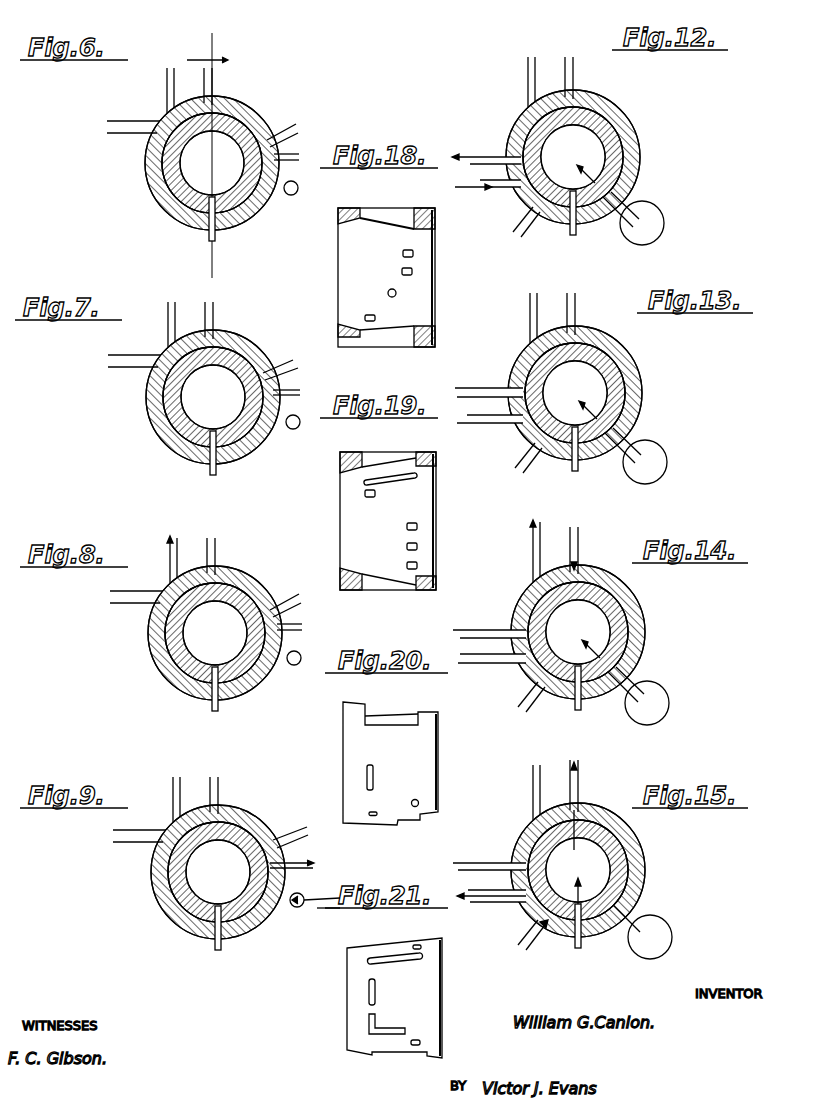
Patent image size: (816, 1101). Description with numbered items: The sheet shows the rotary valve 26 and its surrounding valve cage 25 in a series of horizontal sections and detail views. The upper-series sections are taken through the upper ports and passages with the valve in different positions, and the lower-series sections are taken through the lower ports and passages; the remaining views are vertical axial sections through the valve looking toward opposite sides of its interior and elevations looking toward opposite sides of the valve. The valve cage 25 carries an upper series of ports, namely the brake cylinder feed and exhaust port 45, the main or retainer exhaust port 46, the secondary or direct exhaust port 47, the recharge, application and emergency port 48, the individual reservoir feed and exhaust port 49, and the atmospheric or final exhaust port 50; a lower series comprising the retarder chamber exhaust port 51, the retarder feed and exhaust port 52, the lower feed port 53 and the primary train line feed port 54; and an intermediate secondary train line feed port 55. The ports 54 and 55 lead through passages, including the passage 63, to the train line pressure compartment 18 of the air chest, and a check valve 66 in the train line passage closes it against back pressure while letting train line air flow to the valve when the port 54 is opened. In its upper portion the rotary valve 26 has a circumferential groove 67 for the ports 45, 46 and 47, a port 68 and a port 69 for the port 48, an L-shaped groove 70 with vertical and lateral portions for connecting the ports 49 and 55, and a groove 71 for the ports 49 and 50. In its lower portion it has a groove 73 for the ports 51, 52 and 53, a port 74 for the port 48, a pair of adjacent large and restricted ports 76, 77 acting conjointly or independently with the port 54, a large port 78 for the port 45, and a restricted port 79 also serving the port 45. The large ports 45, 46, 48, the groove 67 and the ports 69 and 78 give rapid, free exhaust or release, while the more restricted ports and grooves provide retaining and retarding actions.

In FIG. 6, the train line pressure compartment 18 is at (207, 154).
In FIG. 6, the valve cage 25 is at (216, 139).
In FIG. 7, the valve cage 25 is at (197, 397).
In FIG. 8, the valve cage 25 is at (207, 633).
In FIG. 9, the valve cage 25 is at (202, 872).
In FIG. 12, the valve cage 25 is at (590, 157).
In FIG. 13, the valve cage 25 is at (594, 393).
In FIG. 14, the valve cage 25 is at (604, 632).
In FIG. 15, the valve cage 25 is at (599, 870).
In FIG. 18, the valve cage 25 is at (428, 271).
In FIG. 19, the valve cage 25 is at (428, 509).
In FIG. 6, the rotary valve 26 is at (188, 163).
In FIG. 7, the rotary valve 26 is at (190, 399).
In FIG. 8, the rotary valve 26 is at (192, 633).
In FIG. 9, the rotary valve 26 is at (196, 875).
In FIG. 12, the rotary valve 26 is at (600, 157).
In FIG. 13, the rotary valve 26 is at (601, 393).
In FIG. 14, the rotary valve 26 is at (578, 632).
In FIG. 15, the rotary valve 26 is at (578, 870).
In FIG. 20, the rotary valve 26 is at (345, 747).
In FIG. 21, the rotary valve 26 is at (350, 994).
In FIG. 6, the brake cylinder feed and exhaust port 45 is at (223, 83).
In FIG. 7, the brake cylinder feed and exhaust port 45 is at (227, 319).
In FIG. 8, the brake cylinder feed and exhaust port 45 is at (225, 556).
In FIG. 9, the brake cylinder feed and exhaust port 45 is at (214, 795).
In FIG. 12, the brake cylinder feed and exhaust port 45 is at (586, 78).
In FIG. 13, the brake cylinder feed and exhaust port 45 is at (586, 313).
In FIG. 14, the brake cylinder feed and exhaust port 45 is at (588, 549).
In FIG. 15, the brake cylinder feed and exhaust port 45 is at (574, 786).
In FIG. 18, the brake cylinder feed and exhaust port 45 is at (390, 214).
In FIG. 19, the brake cylinder feed and exhaust port 45 is at (395, 458).
In FIG. 6, the main or retainer exhaust port 46 is at (135, 106).
In FIG. 7, the main or retainer exhaust port 46 is at (136, 343).
In FIG. 8, the main or retainer exhaust port 46 is at (156, 567).
In FIG. 12, the main or retainer exhaust port 46 is at (510, 106).
In FIG. 13, the main or retainer exhaust port 46 is at (511, 341).
In FIG. 14, the main or retainer exhaust port 46 is at (508, 572).
In FIG. 19, the main or retainer exhaust port 46 is at (415, 475).
In FIG. 6, the secondary or direct exhaust port 47 is at (132, 141).
In FIG. 7, the secondary or direct exhaust port 47 is at (133, 379).
In FIG. 8, the secondary or direct exhaust port 47 is at (135, 624).
In FIG. 19, the secondary or direct exhaust port 47 is at (375, 494).
In FIG. 6, the recharge, application and emergency port 48 is at (198, 227).
In FIG. 7, the recharge, application and emergency port 48 is at (203, 461).
In FIG. 8, the recharge, application and emergency port 48 is at (205, 700).
In FIG. 9, the recharge, application and emergency port 48 is at (218, 928).
In FIG. 12, the recharge, application and emergency port 48 is at (561, 225).
In FIG. 13, the recharge, application and emergency port 48 is at (565, 459).
In FIG. 14, the recharge, application and emergency port 48 is at (578, 704).
In FIG. 15, the recharge, application and emergency port 48 is at (578, 926).
In FIG. 18, the recharge, application and emergency port 48 is at (393, 341).
In FIG. 19, the recharge, application and emergency port 48 is at (398, 583).
In FIG. 6, the individual reservoir feed and exhaust port 49 is at (296, 147).
In FIG. 7, the individual reservoir feed and exhaust port 49 is at (305, 381).
In FIG. 8, the individual reservoir feed and exhaust port 49 is at (301, 619).
In FIG. 18, the individual reservoir feed and exhaust port 49 is at (402, 272).
In FIG. 6, the atmospheric or final exhaust port 50 is at (282, 116).
In FIG. 7, the atmospheric or final exhaust port 50 is at (282, 353).
In FIG. 8, the atmospheric or final exhaust port 50 is at (283, 586).
In FIG. 18, the atmospheric or final exhaust port 50 is at (406, 252).
In FIG. 12, the retarder chamber exhaust port 51 is at (486, 148).
In FIG. 13, the retarder chamber exhaust port 51 is at (489, 382).
In FIG. 14, the retarder chamber exhaust port 51 is at (489, 622).
In FIG. 15, the retarder chamber exhaust port 51 is at (489, 866).
In FIG. 19, the retarder chamber exhaust port 51 is at (407, 527).
In FIG. 12, the retarder feed and exhaust port 52 is at (488, 196).
In FIG. 13, the retarder feed and exhaust port 52 is at (490, 432).
In FIG. 14, the retarder feed and exhaust port 52 is at (492, 673).
In FIG. 15, the retarder feed and exhaust port 52 is at (491, 896).
In FIG. 19, the retarder feed and exhaust port 52 is at (407, 547).
In FIG. 12, the lower feed port 53 is at (504, 214).
In FIG. 13, the lower feed port 53 is at (508, 453).
In FIG. 14, the lower feed port 53 is at (524, 703).
In FIG. 19, the lower feed port 53 is at (407, 566).
In FIG. 12, the primary train line feed port 54 is at (649, 187).
In FIG. 13, the primary train line feed port 54 is at (652, 426).
In FIG. 14, the primary train line feed port 54 is at (655, 672).
In FIG. 18, the primary train line feed port 54 is at (369, 315).
In FIG. 6, the secondary train line feed port 55 is at (279, 200).
In FIG. 7, the secondary train line feed port 55 is at (277, 441).
In FIG. 8, the secondary train line feed port 55 is at (286, 676).
In FIG. 18, the secondary train line feed port 55 is at (396, 293).
In FIG. 6, the passage 63 is at (307, 187).
In FIG. 7, the passage 63 is at (307, 428).
In FIG. 8, the passage 63 is at (307, 655).
In FIG. 12, the check valve 66 is at (652, 218).
In FIG. 13, the check valve 66 is at (655, 456).
In FIG. 14, the check valve 66 is at (654, 696).
In FIG. 15, the check valve 66 is at (642, 932).
In FIG. 6, the circumferential groove 67 is at (182, 90).
In FIG. 7, the circumferential groove 67 is at (189, 346).
In FIG. 8, the circumferential groove 67 is at (191, 582).
In FIG. 9, the circumferential groove 67 is at (200, 821).
In FIG. 12, the circumferential groove 67 is at (543, 81).
In FIG. 13, the circumferential groove 67 is at (544, 318).
In FIG. 14, the circumferential groove 67 is at (545, 551).
In FIG. 15, the circumferential groove 67 is at (516, 798).
In FIG. 20, the circumferential groove 67 is at (392, 714).
In FIG. 21, the circumferential groove 67 is at (390, 950).
In FIG. 6, the port 68 is at (156, 219).
In FIG. 7, the port 68 is at (167, 459).
In FIG. 8, the port 68 is at (172, 699).
In FIG. 9, the port 68 is at (186, 942).
In FIG. 20, the port 68 is at (415, 800).
In FIG. 6, the port 69 is at (236, 247).
In FIG. 7, the port 69 is at (237, 474).
In FIG. 8, the port 69 is at (235, 714).
In FIG. 9, the port 69 is at (257, 937).
In FIG. 12, the port 69 is at (587, 238).
In FIG. 13, the port 69 is at (590, 480).
In FIG. 14, the port 69 is at (603, 709).
In FIG. 15, the port 69 is at (608, 949).
In FIG. 20, the port 69 is at (399, 821).
In FIG. 21, the port 69 is at (395, 1053).
In FIG. 6, the L-shaped groove 70 is at (258, 230).
In FIG. 7, the L-shaped groove 70 is at (274, 464).
In FIG. 8, the L-shaped groove 70 is at (266, 696).
In FIG. 9, the L-shaped groove 70 is at (305, 884).
In FIG. 21, the L-shaped groove 70 is at (395, 1028).
In FIG. 6, the groove 71 is at (295, 132).
In FIG. 7, the groove 71 is at (288, 388).
In FIG. 8, the groove 71 is at (300, 603).
In FIG. 9, the groove 71 is at (287, 820).
In FIG. 21, the groove 71 is at (376, 991).
In FIG. 12, the groove 73 is at (573, 157).
In FIG. 13, the groove 73 is at (575, 393).
In FIG. 14, the groove 73 is at (577, 632).
In FIG. 15, the groove 73 is at (578, 885).
In FIG. 20, the groove 73 is at (374, 770).
In FIG. 12, the port 74 is at (526, 230).
In FIG. 13, the port 74 is at (528, 467).
In FIG. 14, the port 74 is at (541, 707).
In FIG. 15, the port 74 is at (544, 944).
In FIG. 20, the port 74 is at (375, 812).
In FIG. 12, the relatively large port 76 is at (618, 243).
In FIG. 13, the relatively large port 76 is at (607, 465).
In FIG. 14, the relatively large port 76 is at (659, 647).
In FIG. 15, the relatively large port 76 is at (660, 894).
In FIG. 21, the relatively large port 76 is at (416, 1046).
In FIG. 12, the restricted port 77 is at (654, 166).
In FIG. 13, the restricted port 77 is at (657, 407).
In FIG. 14, the restricted port 77 is at (662, 627).
In FIG. 15, the restricted port 77 is at (663, 871).
In FIG. 21, the restricted port 77 is at (418, 1040).
In FIG. 6, the port 78 is at (274, 95).
In FIG. 7, the port 78 is at (263, 329).
In FIG. 8, the port 78 is at (265, 558).
In FIG. 9, the port 78 is at (242, 802).
In FIG. 12, the port 78 is at (647, 105).
In FIG. 13, the port 78 is at (646, 347).
In FIG. 14, the port 78 is at (654, 591).
In FIG. 15, the port 78 is at (642, 814).
In FIG. 21, the port 78 is at (410, 960).
In FIG. 12, the restricted port 79 is at (626, 93).
In FIG. 13, the restricted port 79 is at (629, 333).
In FIG. 14, the restricted port 79 is at (603, 559).
In FIG. 15, the restricted port 79 is at (595, 809).
In FIG. 21, the restricted port 79 is at (418, 945).